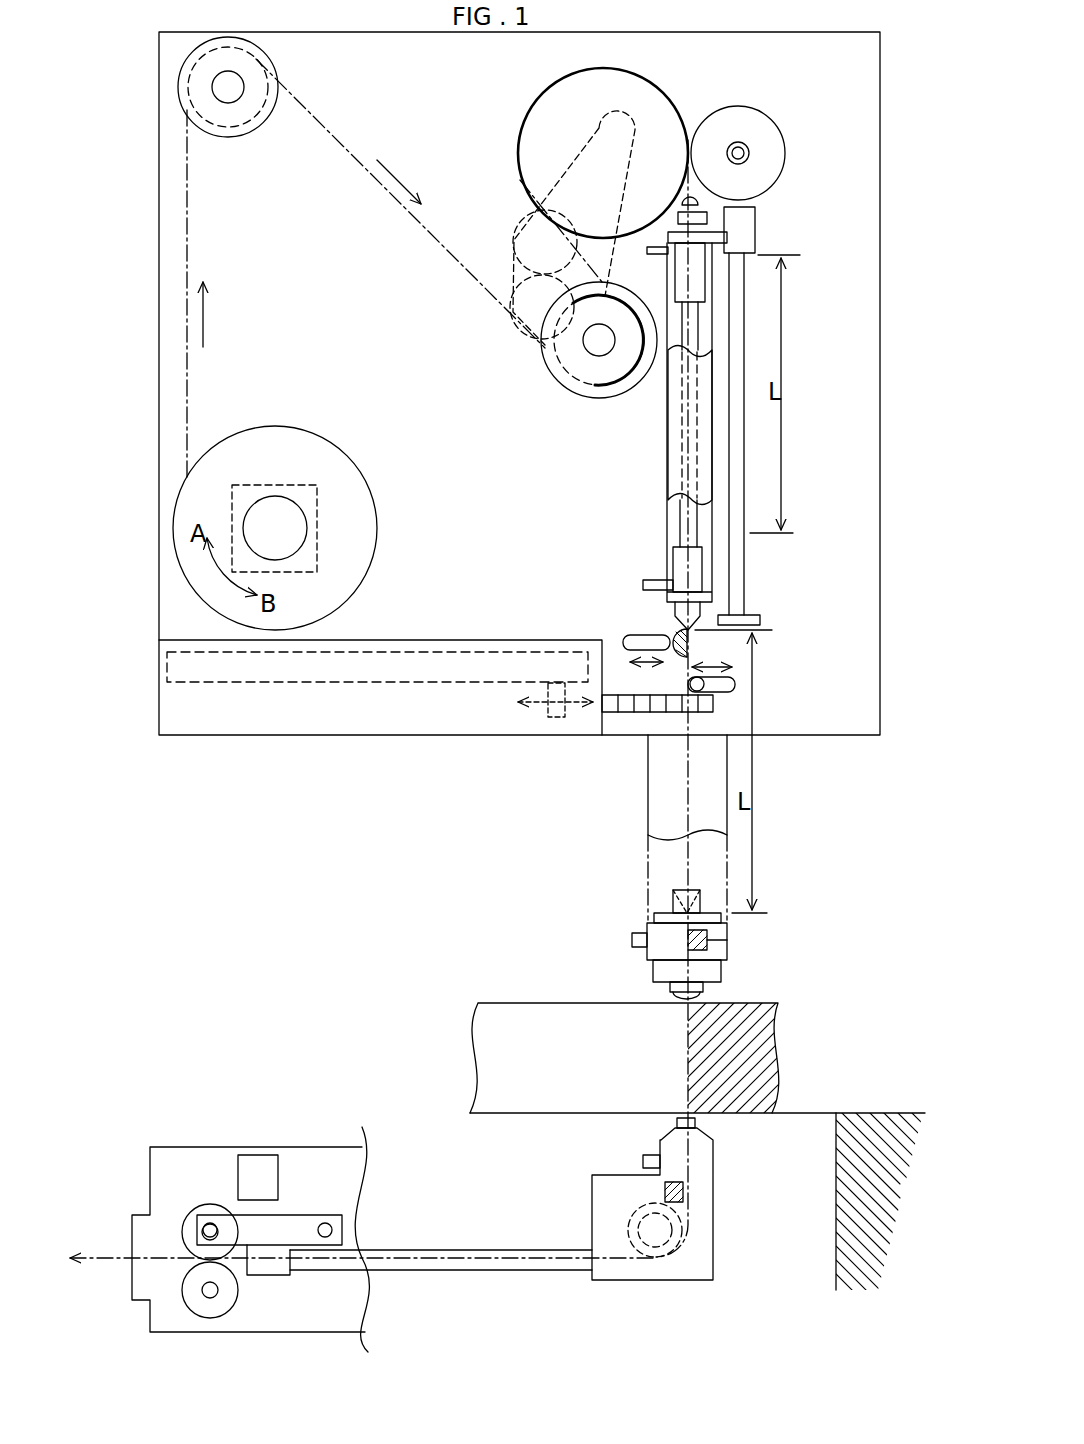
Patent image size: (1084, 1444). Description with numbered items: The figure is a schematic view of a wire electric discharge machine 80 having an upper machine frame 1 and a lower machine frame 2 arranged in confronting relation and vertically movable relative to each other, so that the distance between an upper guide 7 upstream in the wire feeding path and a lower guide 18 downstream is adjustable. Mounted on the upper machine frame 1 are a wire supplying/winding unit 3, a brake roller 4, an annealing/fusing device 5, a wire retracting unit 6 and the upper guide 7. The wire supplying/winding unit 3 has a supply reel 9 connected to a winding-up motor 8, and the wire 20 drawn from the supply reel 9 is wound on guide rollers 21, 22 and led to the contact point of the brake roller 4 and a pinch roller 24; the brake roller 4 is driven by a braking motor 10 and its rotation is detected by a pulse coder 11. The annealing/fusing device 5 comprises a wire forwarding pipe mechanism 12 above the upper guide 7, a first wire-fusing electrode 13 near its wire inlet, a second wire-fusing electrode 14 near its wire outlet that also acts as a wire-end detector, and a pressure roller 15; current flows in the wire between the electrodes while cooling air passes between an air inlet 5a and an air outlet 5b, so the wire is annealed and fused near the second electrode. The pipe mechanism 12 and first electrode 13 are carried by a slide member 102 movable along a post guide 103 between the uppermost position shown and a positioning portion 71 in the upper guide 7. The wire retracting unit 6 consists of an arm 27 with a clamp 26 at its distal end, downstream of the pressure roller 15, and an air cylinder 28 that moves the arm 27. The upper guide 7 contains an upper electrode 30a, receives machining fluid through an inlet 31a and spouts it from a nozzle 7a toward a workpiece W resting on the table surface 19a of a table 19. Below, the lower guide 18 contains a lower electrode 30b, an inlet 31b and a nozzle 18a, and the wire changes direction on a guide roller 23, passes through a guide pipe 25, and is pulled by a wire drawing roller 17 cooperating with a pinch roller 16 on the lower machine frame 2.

The upper machine frame 1 is at (858, 737).
The lower machine frame 2 is at (197, 1147).
The wire supplying/winding unit 3 is at (183, 607).
The brake roller 4 is at (512, 112).
The annealing/fusing device 5 is at (638, 478).
The air inlet 5a is at (650, 250).
The air outlet 5b is at (646, 590).
The wire retracting unit 6 is at (413, 714).
The upper guide 7 is at (742, 966).
The nozzle 7a is at (670, 988).
The winding-up motor 8 is at (232, 512).
The supply reel 9 is at (174, 563).
The braking motor 10 is at (513, 290).
The pulse coder 11 is at (525, 226).
The wire forwarding pipe mechanism 12 is at (667, 430).
The first wire-fusing electrode 13 is at (707, 215).
The second wire-fusing electrode 14 is at (668, 632).
The pressure roller 15 is at (628, 652).
The pinch roller 16 is at (205, 1205).
The wire drawing roller 17 is at (240, 1300).
The lower guide 18 is at (704, 1162).
The nozzle 18a is at (697, 1122).
The table 19 is at (870, 1113).
The table surface 19a is at (802, 1113).
The wire 20 is at (187, 190).
The guide roller 21 is at (270, 60).
The guide roller 22 is at (556, 368).
The guide roller 23 is at (672, 1245).
The pinch roller 24 is at (773, 117).
The guide pipe 25 is at (405, 1250).
The clamp 26 is at (718, 722).
The arm 27 is at (628, 722).
The air cylinder 28 is at (190, 685).
The upper electrode 30a is at (728, 940).
The lower electrode 30b is at (665, 1190).
The inlet 31a is at (632, 940).
The inlet 31b is at (643, 1163).
The positioning portion 71 is at (673, 900).
The wire electric discharge machine 80 is at (830, 858).
The slide member 102 is at (756, 230).
The post guide 103 is at (746, 592).
The workpiece W is at (498, 1022).